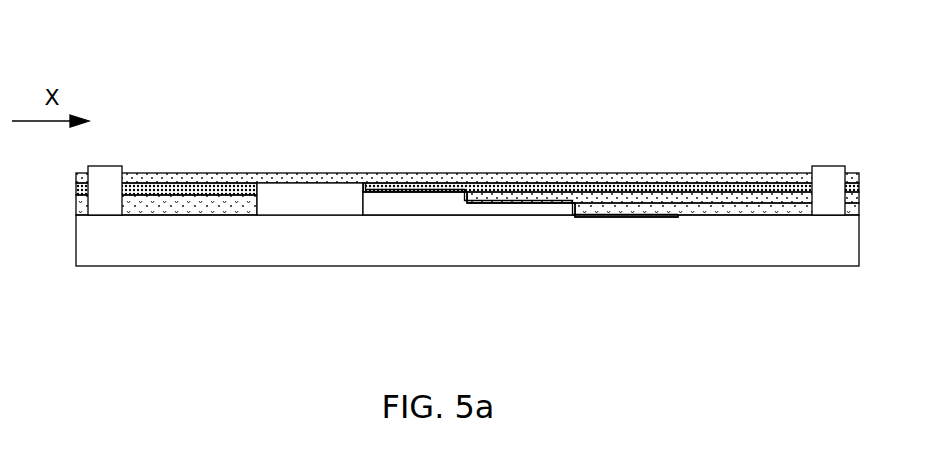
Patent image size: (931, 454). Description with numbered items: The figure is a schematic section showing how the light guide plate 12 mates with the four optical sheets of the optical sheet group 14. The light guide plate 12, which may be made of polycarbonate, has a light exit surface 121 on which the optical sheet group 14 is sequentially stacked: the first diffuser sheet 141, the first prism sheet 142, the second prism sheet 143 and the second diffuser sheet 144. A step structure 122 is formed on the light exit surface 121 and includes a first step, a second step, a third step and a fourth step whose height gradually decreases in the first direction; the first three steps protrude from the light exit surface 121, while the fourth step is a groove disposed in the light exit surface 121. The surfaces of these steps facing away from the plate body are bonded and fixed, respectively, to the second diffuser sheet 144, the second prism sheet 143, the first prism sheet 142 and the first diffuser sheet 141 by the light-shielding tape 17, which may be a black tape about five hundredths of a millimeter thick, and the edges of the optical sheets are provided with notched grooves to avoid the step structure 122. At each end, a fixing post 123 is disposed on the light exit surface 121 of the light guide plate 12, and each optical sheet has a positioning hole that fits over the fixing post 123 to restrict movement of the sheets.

The light guide plate 12 is at (199, 238).
The light exit surface 121 is at (322, 213).
The step structure 122 is at (437, 200).
The fixing post 123 is at (109, 200).
The optical sheet group 14 is at (467, 136).
The first diffuser sheet 141 is at (432, 86).
The first prism sheet 142 is at (645, 186).
The second prism sheet 143 is at (503, 182).
The second diffuser sheet 144 is at (413, 177).
The light-shielding tape 17 is at (533, 200).